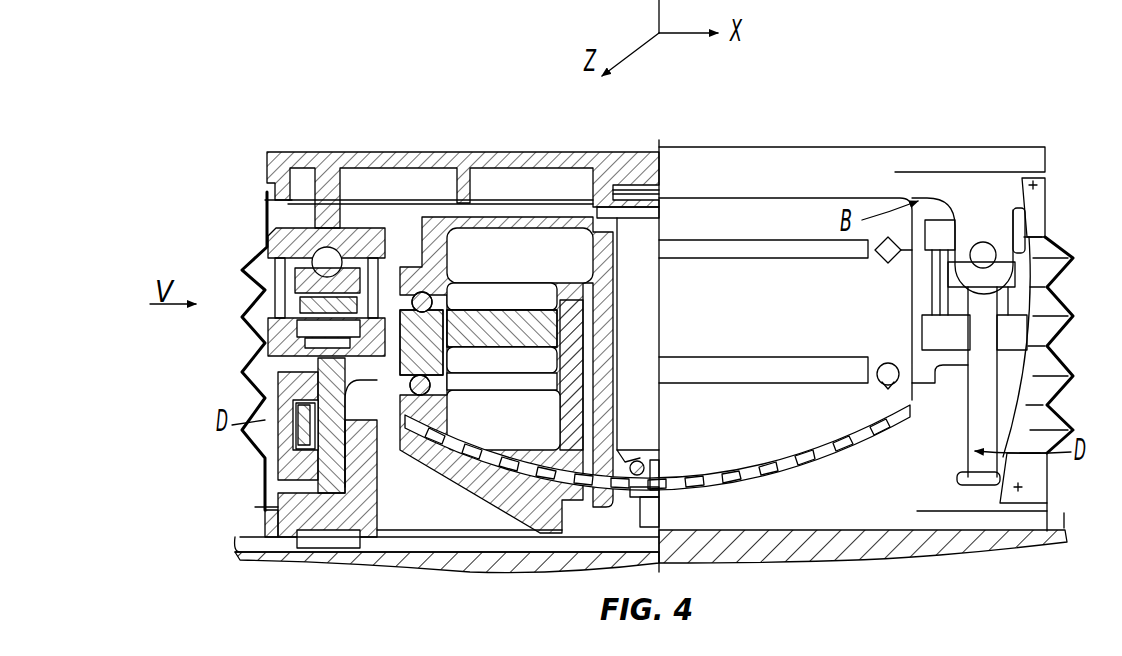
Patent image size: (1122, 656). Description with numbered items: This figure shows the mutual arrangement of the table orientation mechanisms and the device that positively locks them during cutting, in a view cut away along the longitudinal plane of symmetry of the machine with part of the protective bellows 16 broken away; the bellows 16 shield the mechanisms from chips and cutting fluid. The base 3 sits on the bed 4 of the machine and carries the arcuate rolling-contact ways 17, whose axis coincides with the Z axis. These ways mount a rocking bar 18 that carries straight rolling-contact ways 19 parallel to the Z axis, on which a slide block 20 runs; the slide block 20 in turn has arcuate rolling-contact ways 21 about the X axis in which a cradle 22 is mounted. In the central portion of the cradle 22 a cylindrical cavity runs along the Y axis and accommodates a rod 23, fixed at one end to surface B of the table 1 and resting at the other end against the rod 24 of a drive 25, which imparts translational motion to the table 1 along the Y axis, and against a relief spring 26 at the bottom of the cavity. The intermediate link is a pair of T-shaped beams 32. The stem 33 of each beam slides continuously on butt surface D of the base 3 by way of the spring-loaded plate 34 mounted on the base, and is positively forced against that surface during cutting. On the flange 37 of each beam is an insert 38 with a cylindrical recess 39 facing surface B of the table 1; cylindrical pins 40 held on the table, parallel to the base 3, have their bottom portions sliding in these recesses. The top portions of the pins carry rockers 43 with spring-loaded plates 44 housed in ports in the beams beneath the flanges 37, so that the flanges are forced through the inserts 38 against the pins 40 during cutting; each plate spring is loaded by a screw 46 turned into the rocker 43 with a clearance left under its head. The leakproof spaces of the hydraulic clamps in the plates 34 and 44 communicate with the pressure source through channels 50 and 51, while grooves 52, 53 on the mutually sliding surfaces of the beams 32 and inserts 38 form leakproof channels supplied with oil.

The table 1 is at (1018, 156).
The base 3 is at (272, 538).
The bed 4 is at (998, 492).
The bellows 16 is at (1020, 330).
The arcuate rolling-contact ways 17 is at (503, 482).
The rocking bar 18 is at (533, 453).
The straight rolling-contact ways 19 is at (449, 361).
The slide block 20 is at (503, 363).
The arcuate rolling-contact ways 21 is at (449, 279).
The cradle 22 is at (449, 244).
The rod 23 is at (647, 321).
The rod of the drive 24 is at (660, 472).
The drive 25 is at (650, 518).
The relief spring 26 is at (647, 457).
The T-shaped beam 32 is at (412, 388).
The vertical portion (stem) 33 is at (963, 411).
The spring-loaded plate 34 is at (290, 388).
The horizontal portion (flange) 37 is at (1018, 272).
The insert 38 is at (300, 280).
The cylindrical recess 39 is at (300, 240).
The cylindrical pin 40 is at (983, 243).
The rocker 43 is at (1027, 230).
The spring-loaded plate 44 is at (280, 330).
The screw 46 is at (285, 305).
The channel 50 is at (295, 425).
The channel 51 is at (276, 362).
The groove 52 is at (300, 447).
The groove 53 is at (350, 470).